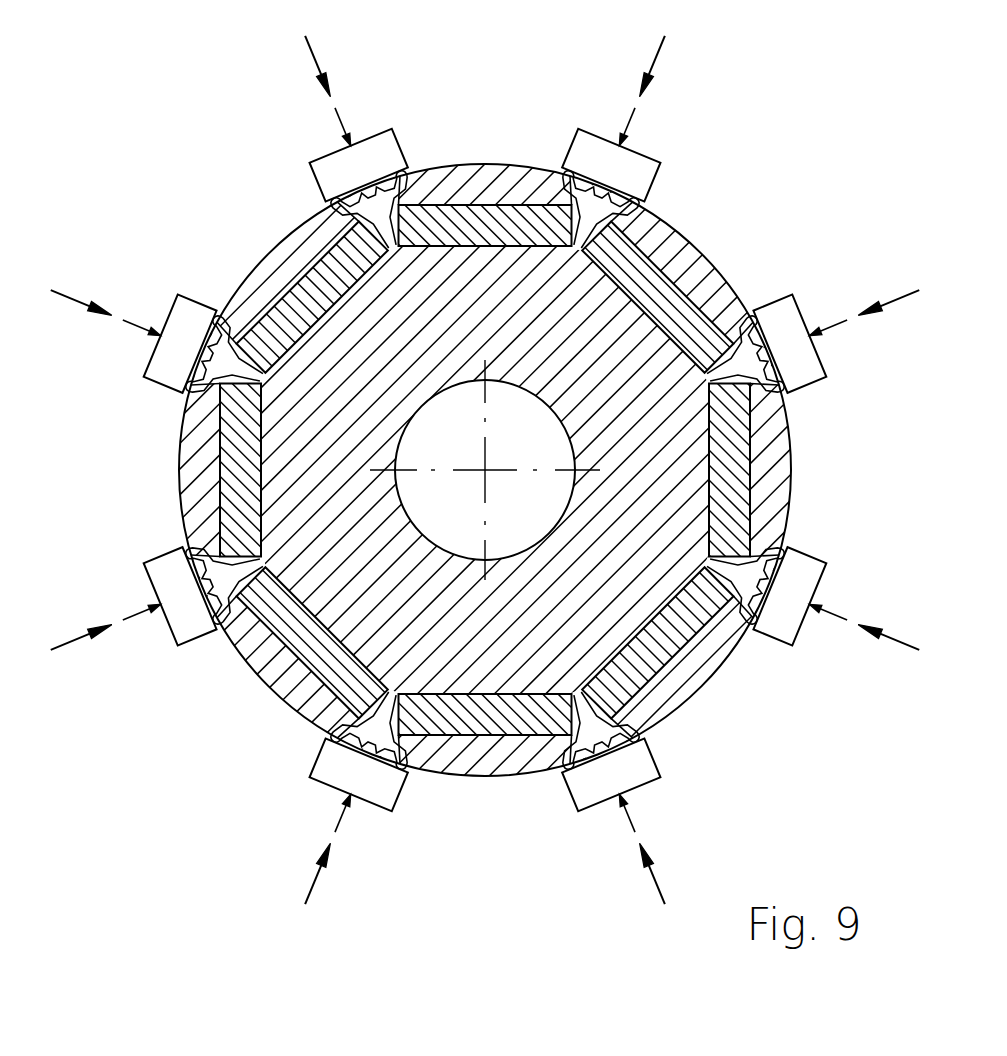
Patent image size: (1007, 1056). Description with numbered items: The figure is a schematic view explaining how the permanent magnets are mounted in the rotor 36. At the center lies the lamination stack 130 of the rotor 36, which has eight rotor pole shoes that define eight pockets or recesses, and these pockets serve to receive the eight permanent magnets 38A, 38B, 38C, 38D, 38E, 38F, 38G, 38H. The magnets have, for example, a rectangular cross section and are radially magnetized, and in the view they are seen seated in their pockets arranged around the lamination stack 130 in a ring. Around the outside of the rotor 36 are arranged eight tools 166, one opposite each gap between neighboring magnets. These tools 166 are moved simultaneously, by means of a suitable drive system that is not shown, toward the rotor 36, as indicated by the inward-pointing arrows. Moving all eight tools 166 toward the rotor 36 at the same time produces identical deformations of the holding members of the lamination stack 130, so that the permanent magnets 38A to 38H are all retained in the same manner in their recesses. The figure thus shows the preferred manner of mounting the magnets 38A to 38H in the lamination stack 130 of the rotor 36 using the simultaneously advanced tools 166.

The rotor 36 is at (790, 163).
The permanent magnet 38A is at (445, 205).
The permanent magnet 38B is at (657, 262).
The permanent magnet 38C is at (751, 428).
The permanent magnet 38D is at (703, 627).
The permanent magnet 38E is at (530, 736).
The permanent magnet 38F is at (337, 697).
The permanent magnet 38G is at (221, 505).
The permanent magnet 38H is at (265, 315).
The lamination stack 130 is at (415, 373).
The tool 166 is at (322, 157).